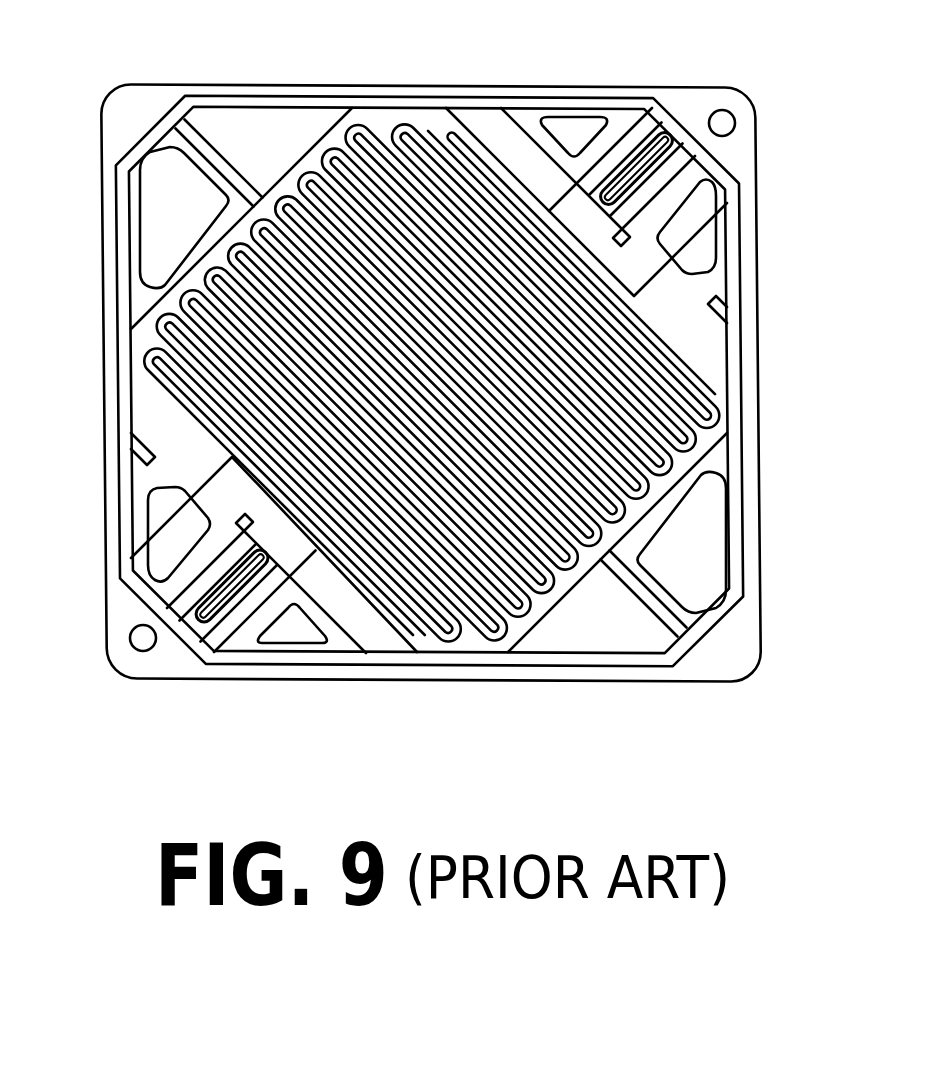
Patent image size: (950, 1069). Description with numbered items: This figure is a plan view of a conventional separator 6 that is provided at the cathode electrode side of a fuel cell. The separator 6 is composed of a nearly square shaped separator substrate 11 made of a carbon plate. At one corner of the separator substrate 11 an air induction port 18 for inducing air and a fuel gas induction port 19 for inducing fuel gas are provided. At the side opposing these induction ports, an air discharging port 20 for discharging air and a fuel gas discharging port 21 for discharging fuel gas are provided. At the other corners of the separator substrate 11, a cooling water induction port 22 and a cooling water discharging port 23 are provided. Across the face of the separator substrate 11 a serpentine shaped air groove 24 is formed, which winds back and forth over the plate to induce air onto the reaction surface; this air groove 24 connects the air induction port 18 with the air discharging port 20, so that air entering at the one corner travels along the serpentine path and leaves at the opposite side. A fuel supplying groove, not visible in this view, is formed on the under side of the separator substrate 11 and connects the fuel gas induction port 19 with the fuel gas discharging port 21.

The separator 6 is at (277, 37).
The separator substrate 11 is at (736, 152).
The air induction port 18 is at (699, 244).
The fuel gas induction port 19 is at (582, 130).
The air discharging port 20 is at (173, 538).
The fuel gas discharging port 21 is at (287, 636).
The cooling water induction port 22 is at (710, 573).
The cooling water discharging port 23 is at (158, 212).
The air groove 24 is at (668, 410).